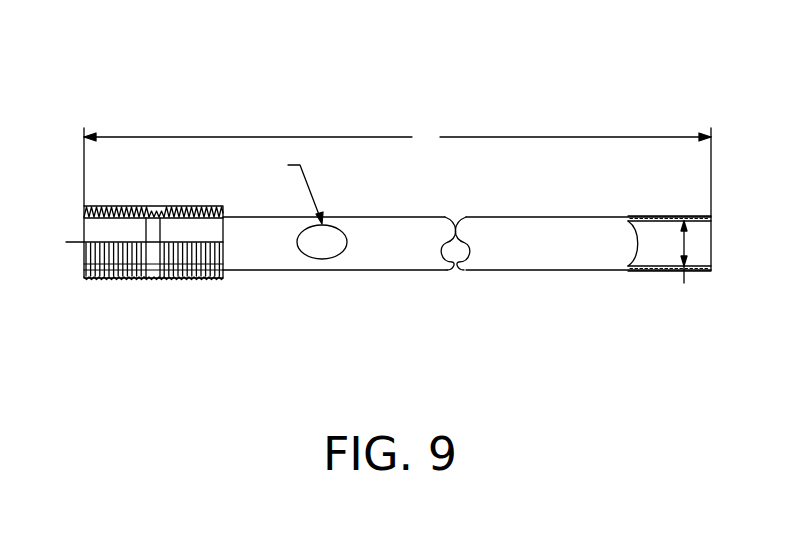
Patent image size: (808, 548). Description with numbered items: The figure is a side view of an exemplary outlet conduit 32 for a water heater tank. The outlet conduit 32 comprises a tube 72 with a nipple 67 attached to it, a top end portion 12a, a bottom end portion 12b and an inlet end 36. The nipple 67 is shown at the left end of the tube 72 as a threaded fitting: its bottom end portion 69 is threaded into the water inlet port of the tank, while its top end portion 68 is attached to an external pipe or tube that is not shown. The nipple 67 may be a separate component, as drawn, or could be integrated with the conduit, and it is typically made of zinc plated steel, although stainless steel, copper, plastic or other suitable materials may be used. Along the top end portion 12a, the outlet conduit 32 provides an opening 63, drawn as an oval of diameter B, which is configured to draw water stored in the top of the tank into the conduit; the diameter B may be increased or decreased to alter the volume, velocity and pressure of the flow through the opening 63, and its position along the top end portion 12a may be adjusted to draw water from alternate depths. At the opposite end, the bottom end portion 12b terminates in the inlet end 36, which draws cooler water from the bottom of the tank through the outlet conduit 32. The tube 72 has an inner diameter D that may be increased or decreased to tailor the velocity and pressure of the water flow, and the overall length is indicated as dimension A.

The outlet conduit 32 is at (564, 118).
The inlet end 36 is at (714, 238).
The opening 63 is at (312, 259).
The nipple 67 is at (150, 279).
The top end portion of the nipple 68 is at (108, 279).
The bottom end portion of the nipple 69 is at (200, 279).
The tube 72 is at (395, 271).
The top end portion 12a is at (80, 360).
The bottom end portion 12b is at (458, 360).